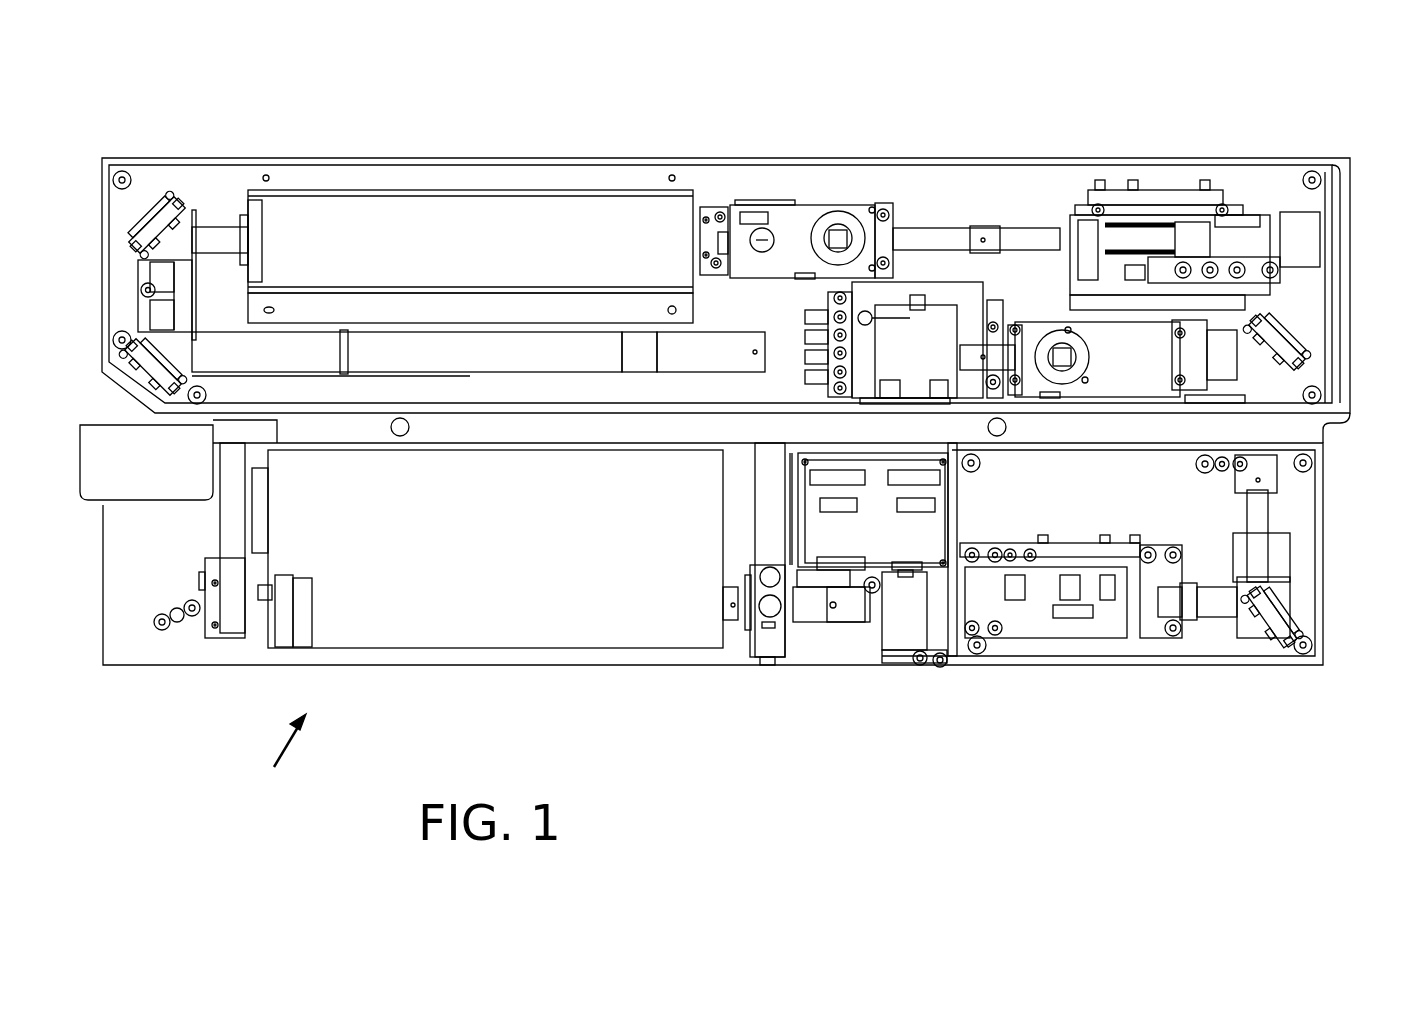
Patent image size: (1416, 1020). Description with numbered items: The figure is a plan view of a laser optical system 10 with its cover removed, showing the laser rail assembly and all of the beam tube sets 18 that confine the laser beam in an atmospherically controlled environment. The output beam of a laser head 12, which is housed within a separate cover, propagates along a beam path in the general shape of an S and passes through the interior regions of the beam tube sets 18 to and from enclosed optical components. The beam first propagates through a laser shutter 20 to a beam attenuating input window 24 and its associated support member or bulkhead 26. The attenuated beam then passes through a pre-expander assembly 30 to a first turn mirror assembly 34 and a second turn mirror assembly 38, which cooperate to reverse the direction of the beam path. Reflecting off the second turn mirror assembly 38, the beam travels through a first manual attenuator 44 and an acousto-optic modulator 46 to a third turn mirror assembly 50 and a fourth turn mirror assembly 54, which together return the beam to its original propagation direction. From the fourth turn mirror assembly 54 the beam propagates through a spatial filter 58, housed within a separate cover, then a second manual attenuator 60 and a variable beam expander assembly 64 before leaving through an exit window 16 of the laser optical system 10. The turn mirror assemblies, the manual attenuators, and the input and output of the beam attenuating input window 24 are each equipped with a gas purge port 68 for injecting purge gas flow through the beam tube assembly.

The laser optical system 10 is at (278, 760).
The laser head 12 is at (455, 600).
The exit window 16 is at (1350, 200).
The beam tube sets 18 is at (160, 317).
The laser shutter 20 is at (772, 660).
The beam attenuating input window 24 is at (868, 593).
The bulkhead 26 is at (905, 625).
The pre-expander assembly 30 is at (1072, 640).
The first turn mirror assembly 34 is at (1270, 640).
The second turn mirror assembly 38 is at (1225, 360).
The first manual attenuator 44 is at (1125, 335).
The acousto-optic modulator 46 is at (950, 292).
The third turn mirror assembly 50 is at (138, 378).
The fourth turn mirror assembly 54 is at (134, 223).
The spatial filter 58 is at (360, 190).
The second manual attenuator 60 is at (795, 222).
The variable beam expander assembly 64 is at (1247, 207).
The gas purge port 68 is at (848, 220).